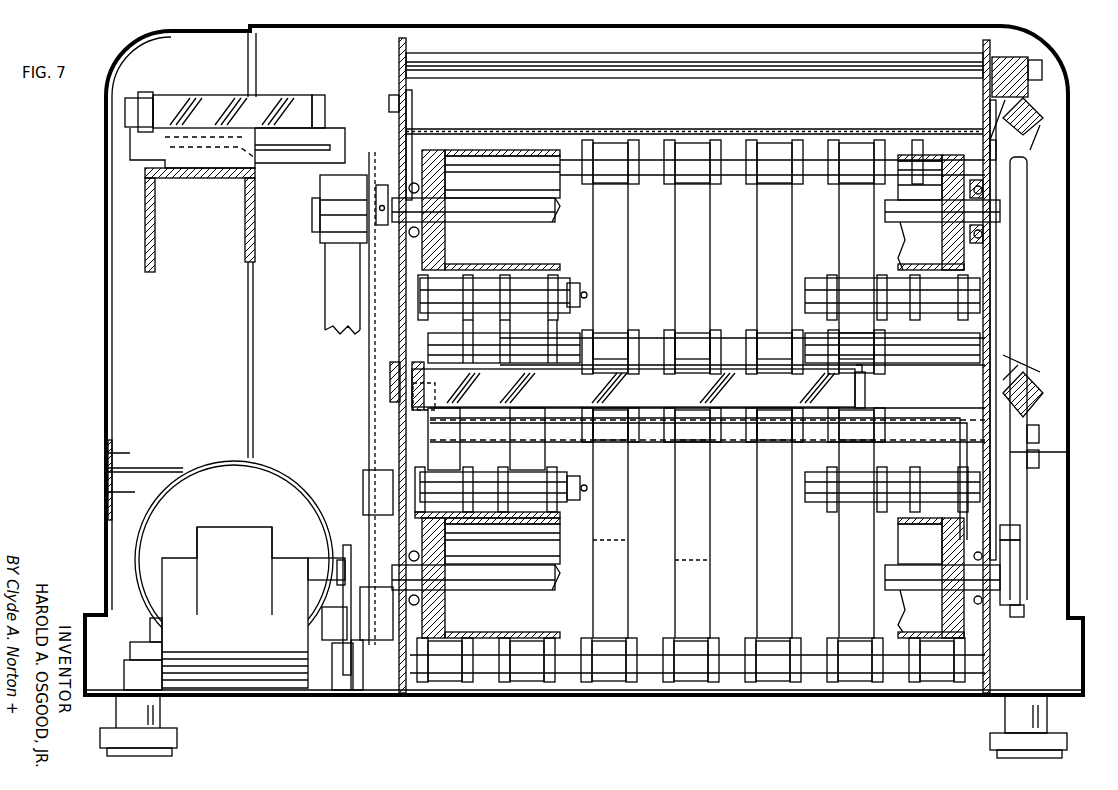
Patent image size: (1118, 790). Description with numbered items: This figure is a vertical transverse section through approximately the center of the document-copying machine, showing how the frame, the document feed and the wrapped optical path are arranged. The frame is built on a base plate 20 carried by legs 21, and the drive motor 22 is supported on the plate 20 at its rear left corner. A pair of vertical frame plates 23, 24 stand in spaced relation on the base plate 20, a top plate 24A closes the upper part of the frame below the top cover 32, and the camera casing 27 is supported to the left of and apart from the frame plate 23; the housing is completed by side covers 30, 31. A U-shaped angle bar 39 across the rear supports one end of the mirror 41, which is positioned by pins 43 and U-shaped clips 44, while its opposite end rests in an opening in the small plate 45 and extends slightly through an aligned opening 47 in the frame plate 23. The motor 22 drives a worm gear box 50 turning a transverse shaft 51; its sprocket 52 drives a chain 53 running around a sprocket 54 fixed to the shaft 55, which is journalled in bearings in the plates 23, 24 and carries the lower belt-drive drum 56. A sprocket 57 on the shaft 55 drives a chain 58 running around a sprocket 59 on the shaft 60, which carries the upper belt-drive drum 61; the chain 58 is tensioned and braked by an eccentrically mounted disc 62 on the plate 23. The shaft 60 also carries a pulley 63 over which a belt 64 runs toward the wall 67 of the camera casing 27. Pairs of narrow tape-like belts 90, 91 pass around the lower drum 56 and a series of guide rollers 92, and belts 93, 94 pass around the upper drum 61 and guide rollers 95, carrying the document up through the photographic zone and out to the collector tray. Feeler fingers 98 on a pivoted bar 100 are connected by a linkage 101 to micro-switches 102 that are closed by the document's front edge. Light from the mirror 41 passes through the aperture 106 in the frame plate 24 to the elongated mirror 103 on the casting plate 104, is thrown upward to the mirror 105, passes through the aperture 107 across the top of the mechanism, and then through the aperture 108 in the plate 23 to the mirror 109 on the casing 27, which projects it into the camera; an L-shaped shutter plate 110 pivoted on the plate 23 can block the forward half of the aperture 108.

The base plate 20 is at (570, 697).
The legs 21 is at (165, 748).
The drive motor 22 is at (215, 470).
The frame plate 23 is at (399, 42).
The frame plate 24 is at (983, 46).
The top plate 24A is at (700, 129).
The camera casing 27 is at (232, 200).
The side cover 30 is at (106, 283).
The side cover 31 is at (1068, 228).
The top cover 32 is at (588, 26).
The U-shaped angle bar 39 is at (800, 425).
The mirror 41 is at (600, 372).
The pins 43 is at (862, 374).
The U-shaped clips 44 is at (865, 396).
The small plate 45 is at (440, 382).
The opening 47 is at (395, 405).
The worm gear box 50 is at (228, 540).
The transverse shaft 51 is at (150, 625).
The sprocket 52 is at (355, 662).
The chain 53 is at (322, 612).
The sprocket 54 is at (343, 555).
The shaft 55 is at (325, 572).
The belt-drive drum 56 is at (545, 600).
The sprocket 57 is at (365, 560).
The chain 58 is at (369, 378).
The sprocket 59 is at (378, 185).
The shaft 60 is at (312, 235).
The belt-drive drum 61 is at (555, 240).
The eccentrically mounted disc 62 is at (363, 478).
The pulley 63 is at (325, 270).
The belt 64 is at (325, 328).
The wall 67 is at (248, 262).
The tape-like belts 90 is at (760, 705).
The tape-like belts 91 is at (442, 465).
The guide rollers 92 is at (512, 480).
The tape-like belts 93 is at (700, 291).
The tape-like belts 94 is at (460, 326).
The guide rollers 95 is at (580, 292).
The feeler fingers 98 is at (668, 478).
The pivoted bar 100 is at (732, 555).
The linkage 101 is at (1010, 570).
The micro-switches 102 is at (1025, 528).
The elongated mirror 103 is at (1043, 393).
The casting plate 104 is at (1040, 452).
The mirror 105 is at (1043, 118).
The aperture 106 is at (985, 395).
The aperture 107 is at (985, 115).
The aperture 108 is at (412, 113).
The mirror 109 is at (278, 98).
The shutter plate 110 is at (398, 105).